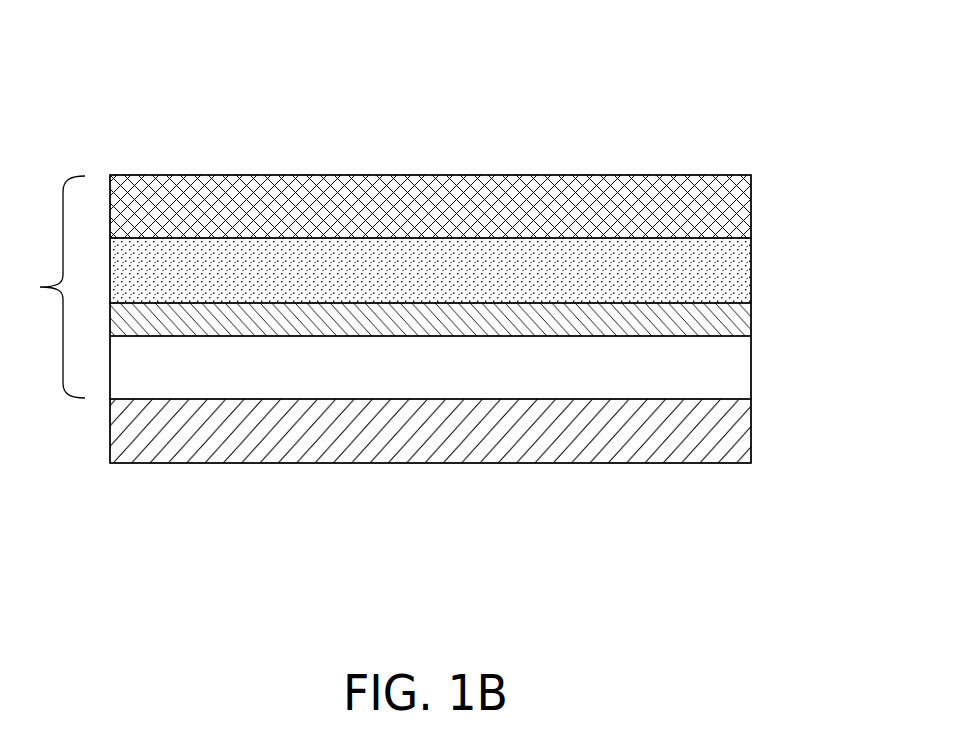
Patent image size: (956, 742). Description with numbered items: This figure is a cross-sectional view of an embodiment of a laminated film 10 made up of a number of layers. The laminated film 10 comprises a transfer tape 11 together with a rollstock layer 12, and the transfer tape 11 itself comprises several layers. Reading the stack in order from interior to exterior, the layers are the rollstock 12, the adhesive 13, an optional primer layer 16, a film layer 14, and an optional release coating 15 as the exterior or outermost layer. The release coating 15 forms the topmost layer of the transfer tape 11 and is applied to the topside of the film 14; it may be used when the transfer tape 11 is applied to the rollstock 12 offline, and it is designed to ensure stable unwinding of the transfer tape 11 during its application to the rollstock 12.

The laminated film 10 is at (125, 99).
The transfer tape 11 is at (50, 287).
The rollstock layer 12 is at (492, 448).
The adhesive 13 is at (733, 366).
The film layer 14 is at (733, 272).
The release coating 15 is at (486, 190).
The primer layer 16 is at (122, 320).